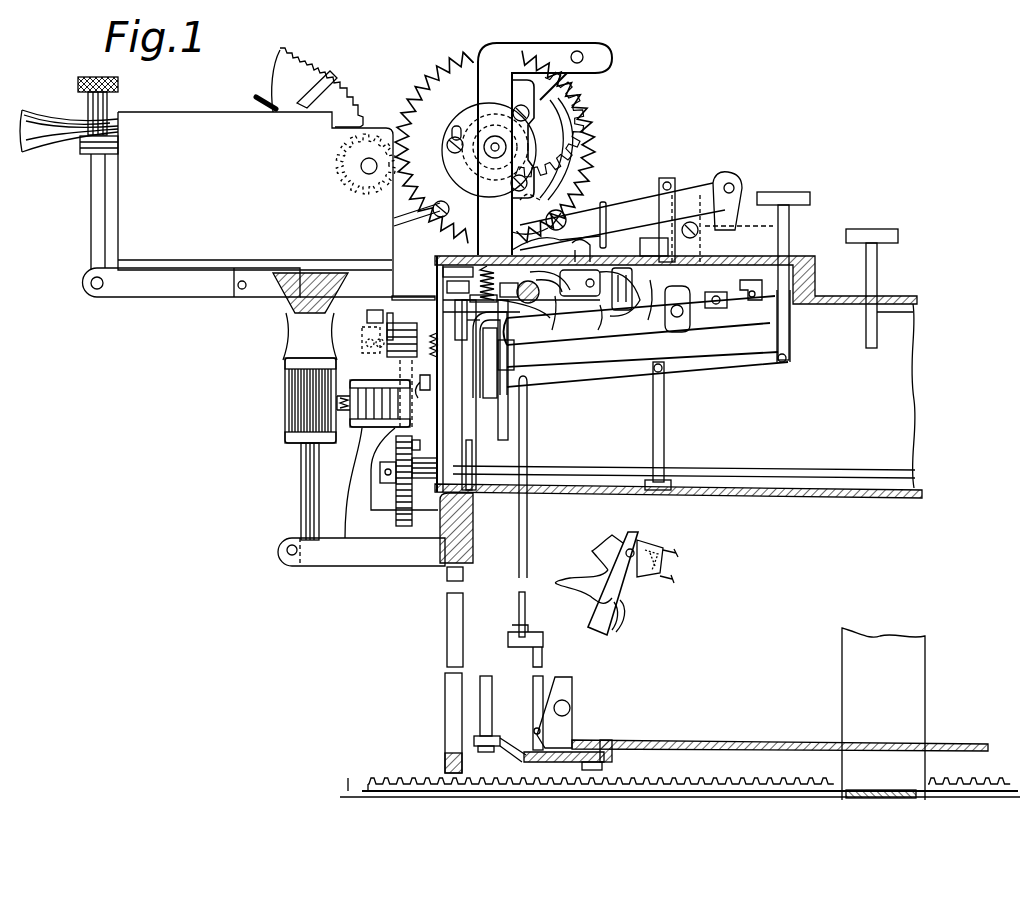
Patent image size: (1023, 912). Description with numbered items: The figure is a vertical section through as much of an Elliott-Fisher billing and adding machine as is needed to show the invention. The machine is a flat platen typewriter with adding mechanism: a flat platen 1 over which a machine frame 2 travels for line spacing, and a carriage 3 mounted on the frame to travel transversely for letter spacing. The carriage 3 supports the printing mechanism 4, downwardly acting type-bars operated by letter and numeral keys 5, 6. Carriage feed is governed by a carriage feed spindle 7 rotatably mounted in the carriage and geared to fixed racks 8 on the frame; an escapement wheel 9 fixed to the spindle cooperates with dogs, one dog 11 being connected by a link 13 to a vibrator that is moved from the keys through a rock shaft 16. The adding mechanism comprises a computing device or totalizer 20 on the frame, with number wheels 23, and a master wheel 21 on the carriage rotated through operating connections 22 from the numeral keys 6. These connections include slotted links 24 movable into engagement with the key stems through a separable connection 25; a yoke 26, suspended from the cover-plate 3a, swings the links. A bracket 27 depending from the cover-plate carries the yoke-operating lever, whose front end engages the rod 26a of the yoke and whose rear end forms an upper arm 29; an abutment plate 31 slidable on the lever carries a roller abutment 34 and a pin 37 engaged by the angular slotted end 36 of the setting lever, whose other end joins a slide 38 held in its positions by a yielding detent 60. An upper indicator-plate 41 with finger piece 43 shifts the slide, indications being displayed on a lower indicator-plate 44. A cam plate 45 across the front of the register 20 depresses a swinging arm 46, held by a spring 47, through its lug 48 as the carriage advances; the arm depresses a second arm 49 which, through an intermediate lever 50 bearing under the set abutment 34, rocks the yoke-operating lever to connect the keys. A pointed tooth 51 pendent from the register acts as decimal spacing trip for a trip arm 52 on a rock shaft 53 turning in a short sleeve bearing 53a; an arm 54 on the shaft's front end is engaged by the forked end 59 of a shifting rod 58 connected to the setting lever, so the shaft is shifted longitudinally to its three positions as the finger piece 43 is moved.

The flat platen 1 is at (673, 782).
The machine frame 2 is at (446, 650).
The carriage 3 is at (678, 493).
The cover-plate 3a is at (556, 232).
The slide 38 is at (583, 248).
The printing mechanism 4 is at (628, 585).
The letter keys 5 is at (884, 236).
The numeral keys 6 is at (800, 182).
The carriage feed spindle 7 is at (608, 482).
The racks 8 is at (402, 520).
The escapement wheel 9 is at (490, 470).
The dog 11 is at (510, 430).
The link 13 is at (512, 405).
The rock shaft 16 is at (521, 288).
The computing device 20 is at (255, 204).
The master wheel 21 is at (596, 116).
The operating connections 22 is at (688, 186).
The number wheels 23 is at (326, 121).
The slotted links 24 is at (730, 250).
The separable connection 25 is at (764, 290).
The yoke 26 is at (720, 322).
The rod 26a is at (748, 310).
The bracket 27 is at (676, 330).
The upper arm 29 is at (592, 360).
The abutment plate 31 is at (630, 356).
The abutment 34 is at (600, 293).
The angular slotted end 36 is at (624, 300).
The pin 37 is at (650, 322).
The upper indicator-plate 41 is at (655, 232).
The key or finger piece 43 is at (603, 185).
The lower indicator-plate 44 is at (666, 239).
The cam plate 45 is at (324, 290).
The swinging arm 46 is at (412, 333).
The spring 47 is at (387, 459).
The lug 48 is at (440, 300).
The second arm 49 is at (421, 224).
The intermediate lever 50 is at (565, 325).
The pointed tooth 51 is at (367, 315).
The trip arm 52 is at (362, 370).
The rock shaft 53 is at (478, 300).
The sleeve bearing 53a is at (411, 380).
The arm 54 is at (497, 355).
The shifting rod 58 is at (535, 330).
The forked end 59 is at (515, 390).
The yielding detent 60 is at (606, 325).